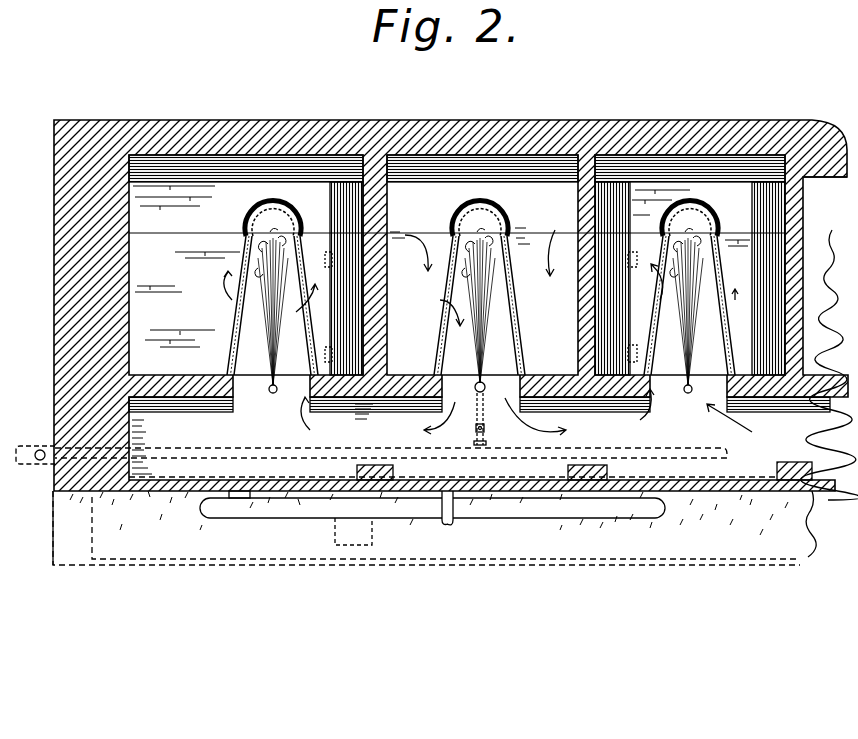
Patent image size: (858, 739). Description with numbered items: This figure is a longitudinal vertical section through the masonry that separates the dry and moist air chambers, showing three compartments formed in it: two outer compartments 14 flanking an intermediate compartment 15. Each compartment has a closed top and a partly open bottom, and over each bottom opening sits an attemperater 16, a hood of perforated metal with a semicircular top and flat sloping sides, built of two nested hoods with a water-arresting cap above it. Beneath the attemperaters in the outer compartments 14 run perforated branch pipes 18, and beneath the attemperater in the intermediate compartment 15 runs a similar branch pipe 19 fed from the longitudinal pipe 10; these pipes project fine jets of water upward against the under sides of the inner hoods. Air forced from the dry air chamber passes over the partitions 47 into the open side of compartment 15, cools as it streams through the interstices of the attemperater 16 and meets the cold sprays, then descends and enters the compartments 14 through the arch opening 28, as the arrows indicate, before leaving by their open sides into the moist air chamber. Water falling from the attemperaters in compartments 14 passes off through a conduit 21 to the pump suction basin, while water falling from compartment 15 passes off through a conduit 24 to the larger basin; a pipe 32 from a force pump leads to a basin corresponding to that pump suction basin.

The longitudinal pipe 10 is at (40, 465).
The compartment 14 is at (457, 265).
The intermediate compartment 15 is at (482, 199).
The attemperater 16 is at (232, 330).
The branch pipe 18 is at (270, 394).
The branch pipe 19 is at (470, 410).
The partition 47 is at (553, 235).
The arch opening 28 is at (479, 431).
The pipe 32 is at (30, 448).
The conduit 21 is at (540, 518).
The conduit 24 is at (445, 520).